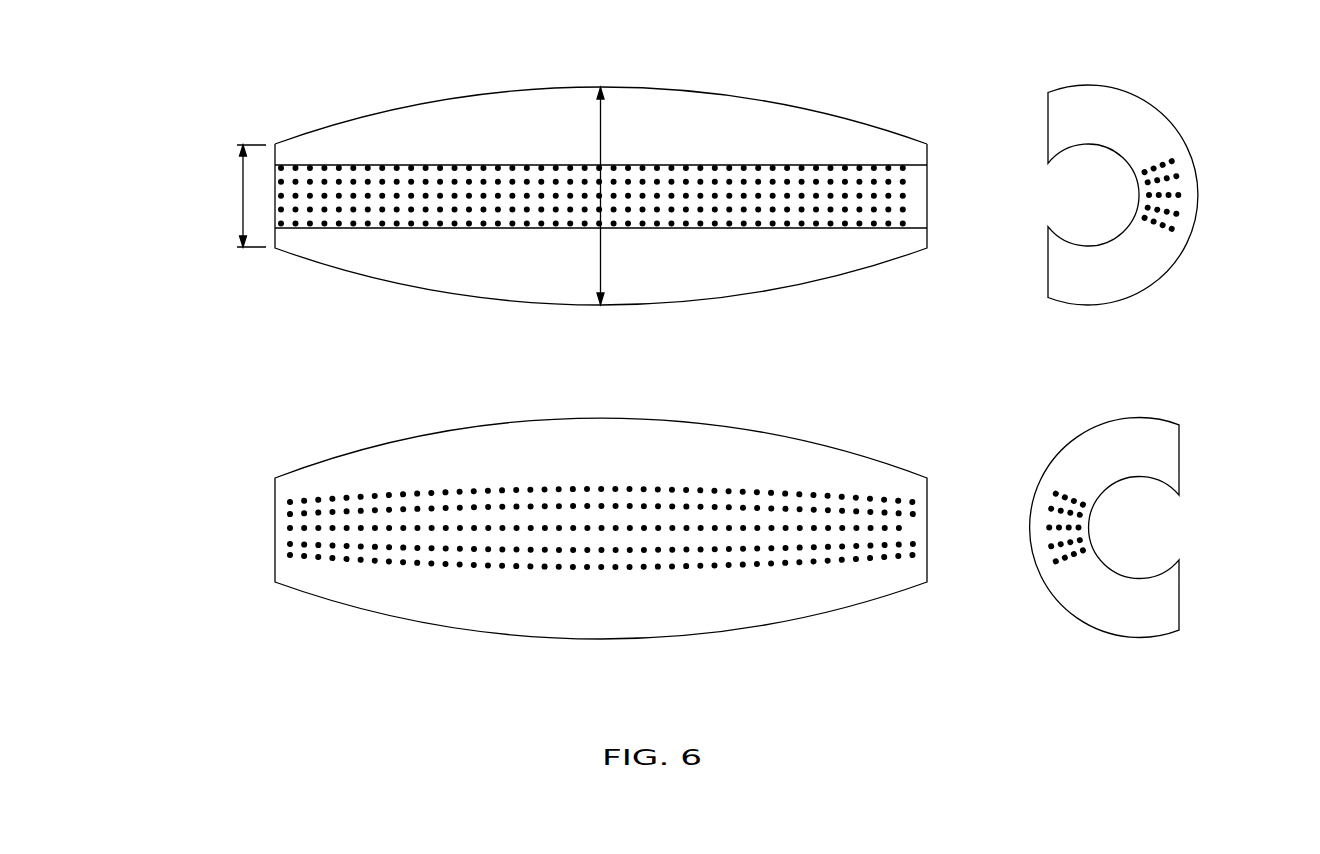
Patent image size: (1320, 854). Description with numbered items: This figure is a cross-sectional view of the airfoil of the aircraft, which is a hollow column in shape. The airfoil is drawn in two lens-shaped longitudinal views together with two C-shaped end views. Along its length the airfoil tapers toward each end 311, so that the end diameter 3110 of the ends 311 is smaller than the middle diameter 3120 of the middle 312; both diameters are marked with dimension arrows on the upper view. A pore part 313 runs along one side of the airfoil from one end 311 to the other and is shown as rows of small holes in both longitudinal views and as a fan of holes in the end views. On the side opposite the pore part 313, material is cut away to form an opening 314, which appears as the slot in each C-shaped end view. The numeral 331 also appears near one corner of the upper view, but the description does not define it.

The end 311 is at (275, 503).
The middle 312 is at (601, 87).
The pore part 313 is at (755, 175).
The opening 314 is at (928, 177).
The top surface edge 331 is at (277, 154).
The end diameter 3110 is at (223, 196).
The middle diameter 3120 is at (631, 196).